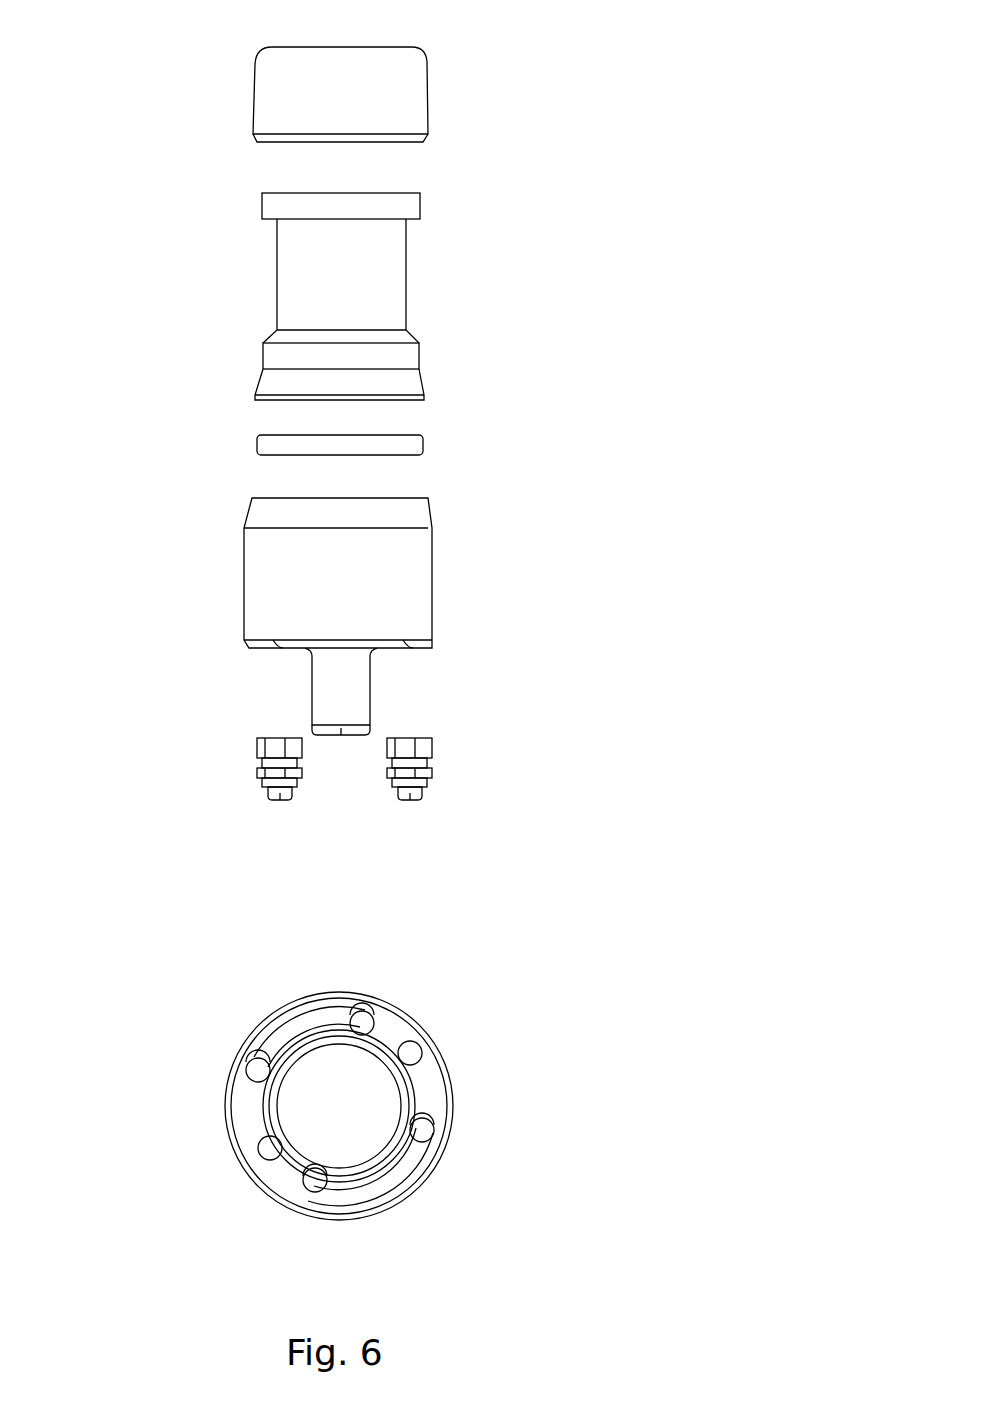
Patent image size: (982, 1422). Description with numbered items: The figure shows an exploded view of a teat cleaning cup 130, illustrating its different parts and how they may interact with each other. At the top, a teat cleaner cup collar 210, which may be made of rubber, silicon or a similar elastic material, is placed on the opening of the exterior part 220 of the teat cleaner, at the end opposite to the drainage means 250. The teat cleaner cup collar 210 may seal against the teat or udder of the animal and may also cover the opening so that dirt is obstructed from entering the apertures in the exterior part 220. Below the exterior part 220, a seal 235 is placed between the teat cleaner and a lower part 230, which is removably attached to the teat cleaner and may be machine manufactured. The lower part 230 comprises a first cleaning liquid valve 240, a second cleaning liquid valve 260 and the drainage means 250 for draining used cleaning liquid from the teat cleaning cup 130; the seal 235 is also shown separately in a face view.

The teat cleaning cup 130 is at (738, 60).
The teat cleaner cup collar 210 is at (383, 101).
The exterior part 220 is at (388, 290).
The seal 235 is at (409, 1005).
The lower part 230 is at (277, 583).
The drainage means 250 is at (365, 727).
The second cleaning liquid valve 260 is at (267, 790).
The first cleaning liquid valve 240 is at (428, 792).